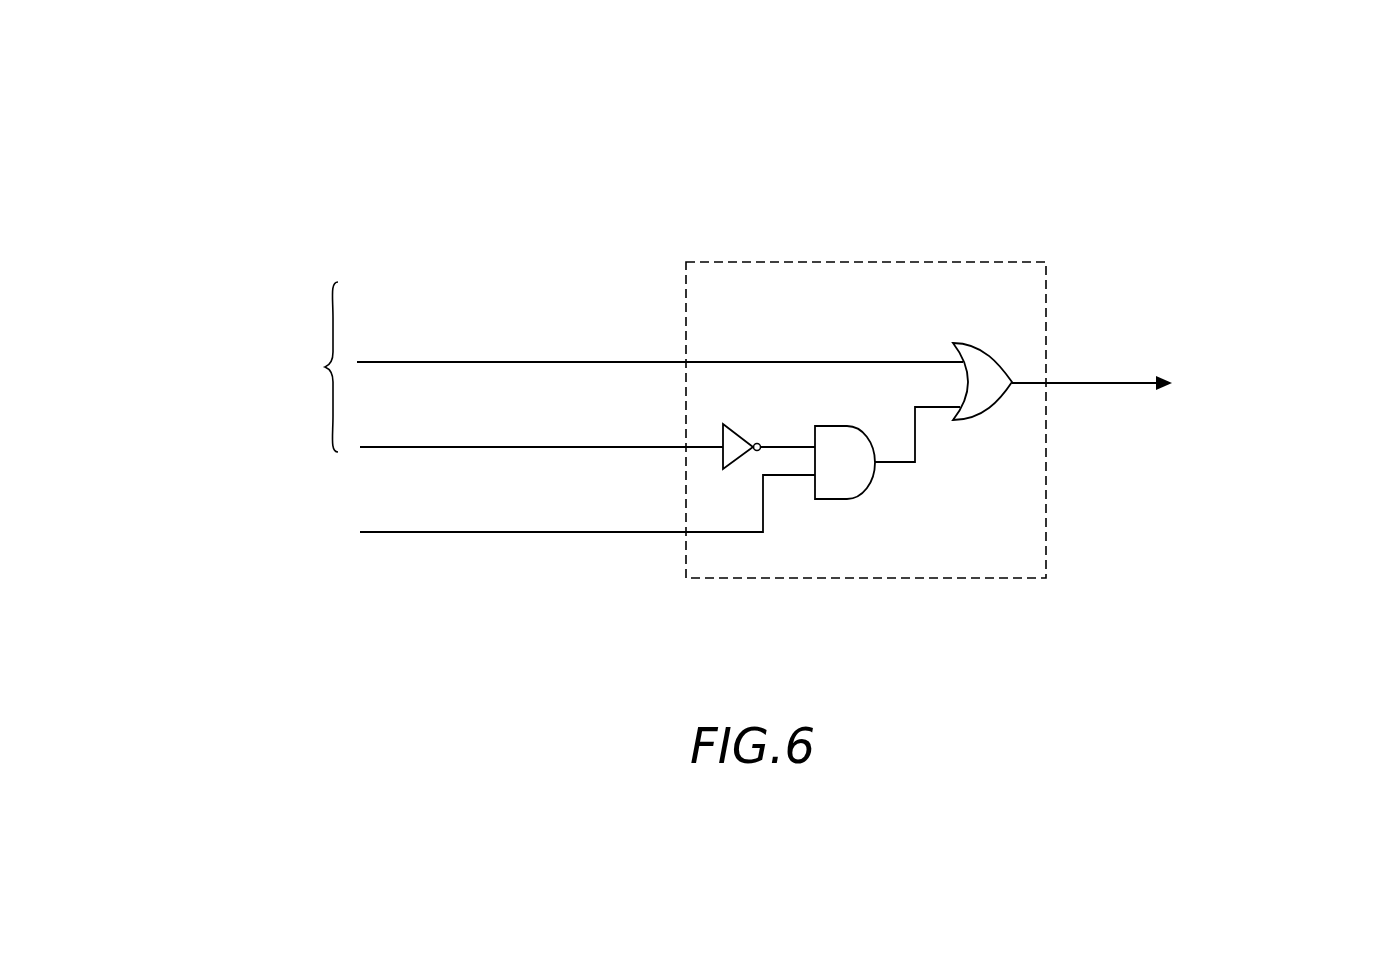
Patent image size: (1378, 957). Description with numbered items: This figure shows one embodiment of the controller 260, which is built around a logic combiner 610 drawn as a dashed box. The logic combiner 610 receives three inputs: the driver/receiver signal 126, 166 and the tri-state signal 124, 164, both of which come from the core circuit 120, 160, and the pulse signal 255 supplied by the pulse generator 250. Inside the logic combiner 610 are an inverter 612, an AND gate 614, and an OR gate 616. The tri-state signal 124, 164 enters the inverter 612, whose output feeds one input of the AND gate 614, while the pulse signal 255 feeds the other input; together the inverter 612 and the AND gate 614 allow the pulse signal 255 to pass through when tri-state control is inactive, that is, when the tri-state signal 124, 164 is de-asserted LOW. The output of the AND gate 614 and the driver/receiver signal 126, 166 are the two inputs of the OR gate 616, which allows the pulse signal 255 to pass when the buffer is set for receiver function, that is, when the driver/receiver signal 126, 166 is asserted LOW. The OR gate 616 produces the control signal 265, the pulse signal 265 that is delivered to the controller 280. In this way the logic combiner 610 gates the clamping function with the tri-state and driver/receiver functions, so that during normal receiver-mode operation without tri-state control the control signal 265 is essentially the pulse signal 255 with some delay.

The core circuit 120 is at (270, 367).
The core circuit 160 is at (270, 367).
The tri-state signal 124 is at (541, 430).
The tri-state signal 164 is at (652, 465).
The driver/receiver signal 126 is at (660, 332).
The driver/receiver signal 166 is at (538, 380).
The pulse generator 250 is at (269, 495).
The pulse signal 255 is at (570, 550).
The controller 260 is at (1257, 101).
The control signal 265 is at (1120, 402).
The controller 280 is at (1276, 374).
The logic combiner 610 is at (943, 280).
The inverter 612 is at (732, 443).
The AND gate 614 is at (848, 452).
The OR gate 616 is at (985, 372).